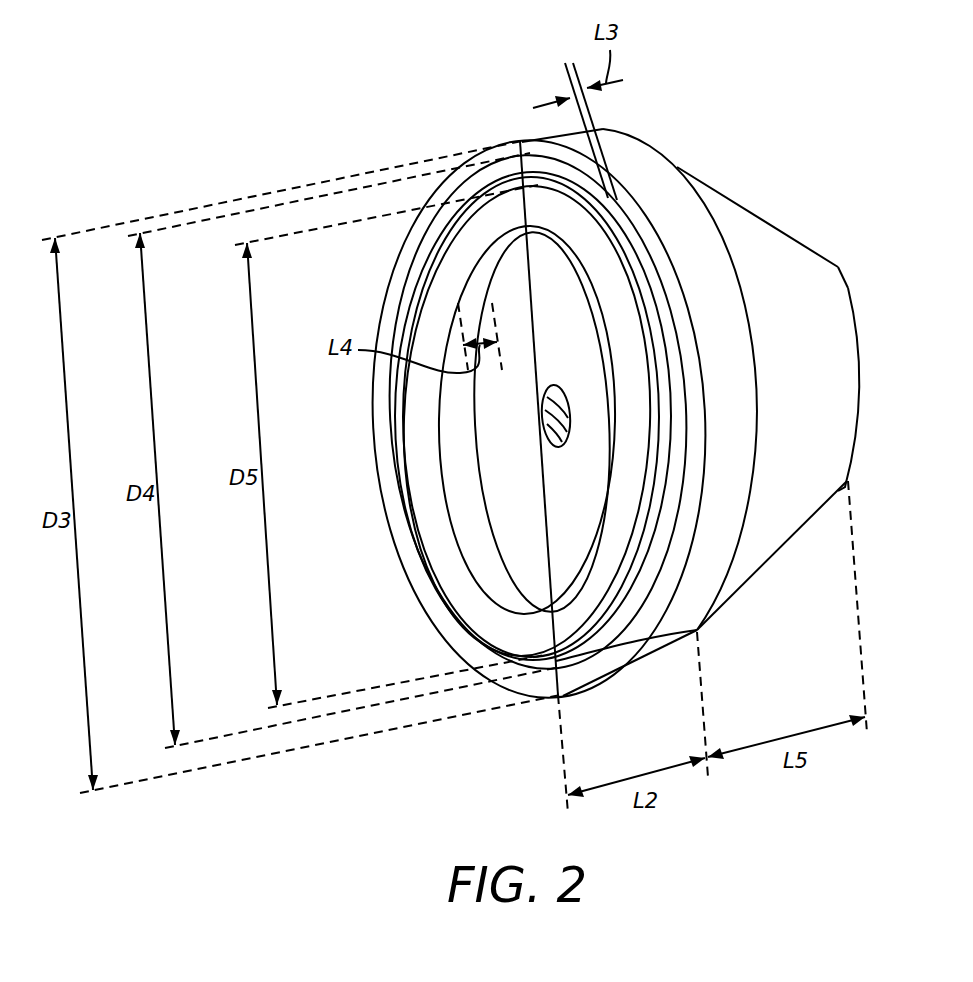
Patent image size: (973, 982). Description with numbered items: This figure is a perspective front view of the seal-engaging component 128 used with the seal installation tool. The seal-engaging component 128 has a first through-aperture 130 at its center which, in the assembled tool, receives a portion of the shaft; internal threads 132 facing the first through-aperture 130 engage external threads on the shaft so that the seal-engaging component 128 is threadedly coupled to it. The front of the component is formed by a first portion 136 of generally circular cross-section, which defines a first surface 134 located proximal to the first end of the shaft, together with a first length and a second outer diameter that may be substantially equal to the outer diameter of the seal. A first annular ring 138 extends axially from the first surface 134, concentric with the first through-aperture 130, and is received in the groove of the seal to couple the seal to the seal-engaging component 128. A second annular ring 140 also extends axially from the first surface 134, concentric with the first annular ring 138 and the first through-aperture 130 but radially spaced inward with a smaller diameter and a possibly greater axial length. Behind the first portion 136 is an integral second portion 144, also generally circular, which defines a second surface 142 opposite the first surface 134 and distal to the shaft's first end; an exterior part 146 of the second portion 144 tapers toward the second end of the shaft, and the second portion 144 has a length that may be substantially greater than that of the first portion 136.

The seal-engaging component 128 is at (790, 190).
The first through-aperture 130 is at (537, 426).
The internal threads 132 is at (542, 415).
The first surface 134 is at (383, 469).
The first portion 136 is at (523, 118).
The first annular ring 138 is at (470, 190).
The second annular ring 140 is at (430, 327).
The second surface 142 is at (850, 288).
The second portion 144 is at (776, 598).
The exterior part 146 is at (783, 497).